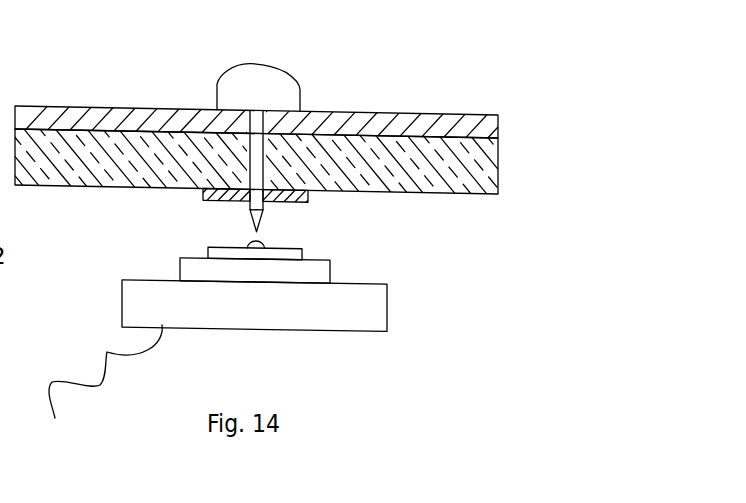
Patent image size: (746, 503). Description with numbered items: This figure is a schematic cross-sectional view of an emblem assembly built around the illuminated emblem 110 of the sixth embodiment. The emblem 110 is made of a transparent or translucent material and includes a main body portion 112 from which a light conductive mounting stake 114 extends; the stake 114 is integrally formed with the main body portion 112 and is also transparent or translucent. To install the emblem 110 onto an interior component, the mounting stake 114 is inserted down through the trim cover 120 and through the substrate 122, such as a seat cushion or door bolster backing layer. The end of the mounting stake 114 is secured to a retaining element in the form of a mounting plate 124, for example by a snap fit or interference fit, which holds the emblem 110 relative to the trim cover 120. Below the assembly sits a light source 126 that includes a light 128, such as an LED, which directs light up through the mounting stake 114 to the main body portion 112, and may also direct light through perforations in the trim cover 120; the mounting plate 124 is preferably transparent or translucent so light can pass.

The illuminated emblem 110 is at (216, 58).
The main body portion 112 is at (283, 84).
The mounting stake 114 is at (248, 207).
The trim cover 120 is at (386, 118).
The substrate 122 is at (497, 156).
The mounting plate 124 is at (292, 203).
The light source 126 is at (402, 273).
The light 128 is at (246, 241).